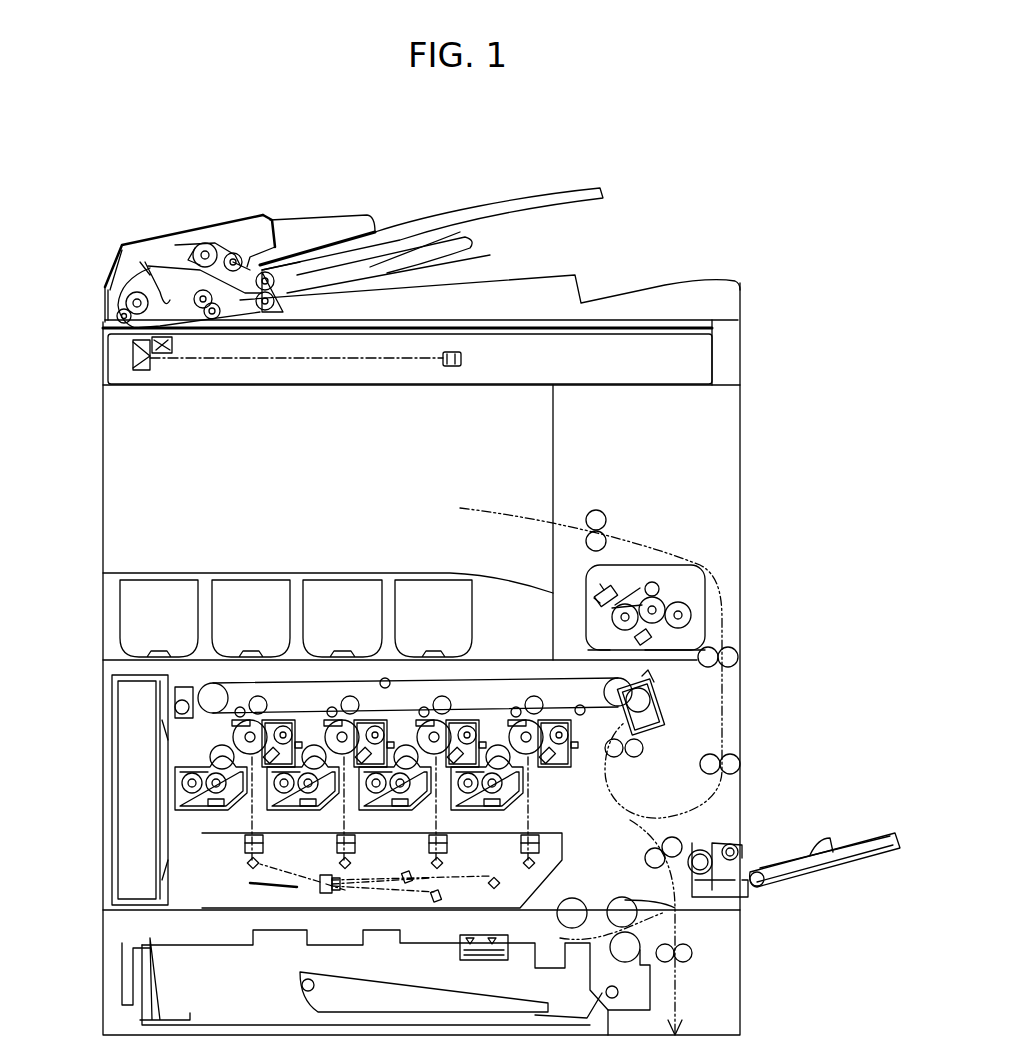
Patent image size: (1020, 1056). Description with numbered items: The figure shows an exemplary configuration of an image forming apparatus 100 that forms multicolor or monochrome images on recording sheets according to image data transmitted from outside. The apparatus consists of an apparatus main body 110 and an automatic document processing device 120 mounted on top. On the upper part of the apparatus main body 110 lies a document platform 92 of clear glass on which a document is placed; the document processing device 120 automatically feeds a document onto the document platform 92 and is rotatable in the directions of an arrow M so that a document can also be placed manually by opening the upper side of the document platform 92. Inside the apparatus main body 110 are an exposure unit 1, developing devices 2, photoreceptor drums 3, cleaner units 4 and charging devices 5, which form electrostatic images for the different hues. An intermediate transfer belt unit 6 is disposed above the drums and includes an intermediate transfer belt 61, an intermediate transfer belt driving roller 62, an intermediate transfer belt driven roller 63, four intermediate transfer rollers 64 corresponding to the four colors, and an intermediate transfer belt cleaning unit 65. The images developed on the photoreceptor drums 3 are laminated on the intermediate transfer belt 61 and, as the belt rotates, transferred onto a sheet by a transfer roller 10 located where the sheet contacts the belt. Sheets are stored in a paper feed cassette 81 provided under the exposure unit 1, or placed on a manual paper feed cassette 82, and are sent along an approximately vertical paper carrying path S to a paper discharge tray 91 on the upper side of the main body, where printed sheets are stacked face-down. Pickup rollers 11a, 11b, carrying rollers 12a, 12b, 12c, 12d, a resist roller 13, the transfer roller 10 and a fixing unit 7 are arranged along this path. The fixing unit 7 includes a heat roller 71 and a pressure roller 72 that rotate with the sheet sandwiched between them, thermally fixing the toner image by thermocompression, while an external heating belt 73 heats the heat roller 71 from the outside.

The exposure unit 1 is at (567, 855).
The developing devices 2 is at (215, 750).
The photoreceptor drums 3 is at (250, 720).
The cleaner units 4 is at (283, 722).
The charging devices 5 is at (255, 797).
The intermediate transfer belt unit 6 is at (425, 664).
The fixing unit 7 is at (683, 586).
The transfer roller 10 is at (652, 702).
The pickup roller 11a is at (578, 900).
The pickup roller 11b is at (748, 856).
The carrying roller 12a is at (682, 846).
The carrying roller 12b is at (597, 510).
The carrying roller 12c is at (738, 657).
The carrying roller 12d is at (740, 764).
The resist roller 13 is at (643, 750).
The intermediate transfer belt 61 is at (505, 677).
The intermediate transfer belt driving roller 62 is at (640, 681).
The intermediate transfer belt driven roller 63 is at (216, 686).
The intermediate transfer rollers 64 is at (265, 703).
The intermediate transfer belt cleaning unit 65 is at (188, 688).
The heat roller 71 is at (662, 598).
The pressure roller 72 is at (690, 614).
The external heating belt 73 is at (631, 603).
The paper feed cassette 81 is at (370, 985).
The manual paper feed cassette 82 is at (840, 836).
The paper discharge tray 91 is at (318, 573).
The document platform 92 is at (493, 318).
The image forming apparatus 100 is at (742, 253).
The apparatus main body 110 is at (100, 540).
The automatic document processing device 120 is at (208, 218).
The arrow M is at (421, 168).
The paper carrying path S is at (591, 771).